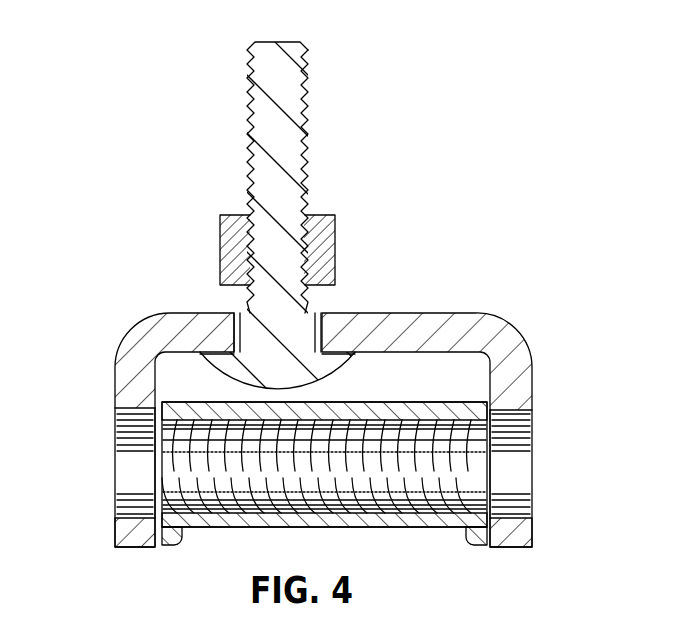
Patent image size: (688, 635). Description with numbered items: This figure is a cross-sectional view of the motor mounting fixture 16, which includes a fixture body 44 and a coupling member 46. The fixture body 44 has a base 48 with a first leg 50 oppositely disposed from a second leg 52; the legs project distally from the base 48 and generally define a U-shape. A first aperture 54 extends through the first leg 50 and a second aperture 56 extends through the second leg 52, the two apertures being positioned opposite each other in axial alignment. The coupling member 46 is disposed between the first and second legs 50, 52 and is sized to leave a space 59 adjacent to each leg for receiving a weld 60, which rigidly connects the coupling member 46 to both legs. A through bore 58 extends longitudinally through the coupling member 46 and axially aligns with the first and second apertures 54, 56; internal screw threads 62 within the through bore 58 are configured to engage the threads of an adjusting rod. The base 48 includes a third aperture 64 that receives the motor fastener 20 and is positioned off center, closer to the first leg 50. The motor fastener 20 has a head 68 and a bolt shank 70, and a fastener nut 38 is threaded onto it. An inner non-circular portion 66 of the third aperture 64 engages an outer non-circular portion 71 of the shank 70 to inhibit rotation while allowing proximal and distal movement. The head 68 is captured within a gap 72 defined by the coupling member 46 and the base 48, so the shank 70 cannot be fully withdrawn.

The motor mounting fixture 16 is at (172, 125).
The motor fastener 20 is at (308, 89).
The bolt shank 70 is at (297, 163).
The fastener nut 38 is at (336, 233).
The third aperture 64 is at (236, 312).
The inner non-circular portion 66 is at (230, 336).
The fixture body 44 is at (147, 317).
The outer non-circular portion 71 is at (298, 326).
The base 48 is at (455, 323).
The head 68 is at (328, 366).
The gap 72 is at (404, 373).
The space 59 is at (156, 442).
The first aperture 54 is at (117, 474).
The second aperture 56 is at (526, 447).
The through bore 58 is at (324, 466).
The first leg 50 is at (148, 548).
The second leg 52 is at (512, 548).
The weld 60 is at (171, 546).
The internal screw threads 62 is at (289, 498).
The coupling member 46 is at (402, 524).